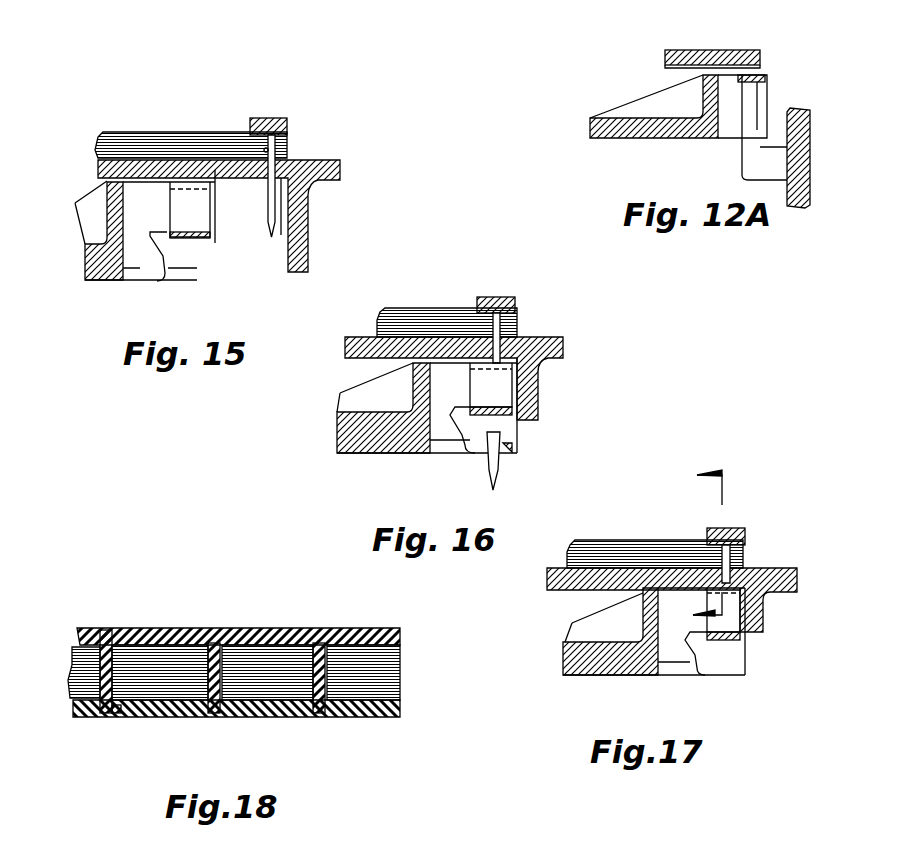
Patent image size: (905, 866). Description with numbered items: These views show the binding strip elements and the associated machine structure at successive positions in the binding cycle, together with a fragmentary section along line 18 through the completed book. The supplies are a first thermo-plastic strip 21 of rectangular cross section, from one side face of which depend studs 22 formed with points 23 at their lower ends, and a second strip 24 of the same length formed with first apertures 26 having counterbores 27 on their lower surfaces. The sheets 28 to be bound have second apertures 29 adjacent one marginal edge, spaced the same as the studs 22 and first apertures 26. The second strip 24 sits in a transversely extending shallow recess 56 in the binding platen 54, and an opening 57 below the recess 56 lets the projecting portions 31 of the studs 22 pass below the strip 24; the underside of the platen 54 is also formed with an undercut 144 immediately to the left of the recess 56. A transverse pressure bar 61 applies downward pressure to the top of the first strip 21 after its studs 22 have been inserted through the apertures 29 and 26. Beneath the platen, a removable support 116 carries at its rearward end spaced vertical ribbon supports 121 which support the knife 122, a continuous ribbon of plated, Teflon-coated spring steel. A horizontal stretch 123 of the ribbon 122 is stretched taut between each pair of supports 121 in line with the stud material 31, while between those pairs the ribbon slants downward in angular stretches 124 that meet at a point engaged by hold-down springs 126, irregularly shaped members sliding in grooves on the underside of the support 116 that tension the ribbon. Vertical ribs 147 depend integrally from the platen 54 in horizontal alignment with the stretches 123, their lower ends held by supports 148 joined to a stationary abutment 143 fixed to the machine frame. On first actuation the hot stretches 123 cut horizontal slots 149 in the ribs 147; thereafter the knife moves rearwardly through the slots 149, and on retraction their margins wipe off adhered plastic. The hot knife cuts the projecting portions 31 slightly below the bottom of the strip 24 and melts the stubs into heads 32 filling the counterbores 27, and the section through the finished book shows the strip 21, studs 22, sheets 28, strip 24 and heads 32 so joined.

In FIG. 17, the section line 18— 18 is at (704, 543).
In FIG. 15, the first thermo-plastic strip 21 is at (280, 119).
In FIG. 16, the first thermo-plastic strip 21 is at (515, 300).
In FIG. 17, the first thermo-plastic strip 21 is at (745, 533).
In FIG. 18, the first thermo-plastic strip 21 is at (233, 628).
In FIG. 15, the studs 22 is at (265, 142).
In FIG. 16, the studs 22 is at (503, 325).
In FIG. 17, the studs 22 is at (726, 564).
In FIG. 18, the studs 22 is at (222, 688).
In FIG. 15, the points 23 is at (268, 231).
In FIG. 16, the points 23 is at (497, 488).
In FIG. 15, the second strip 24 is at (314, 181).
In FIG. 17, the second strip 24 is at (738, 570).
In FIG. 18, the second strip 24 is at (380, 717).
In FIG. 15, the first apertures 26 is at (276, 150).
In FIG. 18, the first apertures 26 is at (114, 717).
In FIG. 15, the counterbores 27 is at (266, 190).
In FIG. 18, the counterbores 27 is at (100, 715).
In FIG. 15, the sheets 28 is at (155, 135).
In FIG. 16, the sheets 28 is at (447, 322).
In FIG. 17, the sheets 28 is at (655, 554).
In FIG. 18, the sheets 28 is at (165, 655).
In FIG. 15, the second apertures 29 is at (278, 138).
In FIG. 18, the second apertures 29 is at (108, 630).
In FIG. 15, the projecting portions of studs 31 is at (310, 225).
In FIG. 16, the projecting portions of studs 31 is at (510, 446).
In FIG. 17, the heads 32 is at (763, 612).
In FIG. 18, the heads 32 is at (318, 705).
In FIG. 15, the binding platen 54 is at (98, 170).
In FIG. 12A, the binding platen 54 is at (670, 50).
In FIG. 16, the binding platen 54 is at (454, 378).
In FIG. 15, the shallow recess 56 is at (312, 196).
In FIG. 15, the opening 57 is at (288, 249).
In FIG. 15, the pressure bar 61 is at (263, 115).
In FIG. 16, the pressure bar 61 is at (497, 292).
In FIG. 17, the pressure bar 61 is at (742, 518).
In FIG. 15, the removable support 116 is at (100, 268).
In FIG. 12A, the removable support 116 is at (667, 108).
In FIG. 16, the removable support 116 is at (393, 445).
In FIG. 17, the removable support 116 is at (630, 668).
In FIG. 15, the vertical ribbon supports 121 is at (207, 178).
In FIG. 12A, the vertical ribbon supports 121 is at (733, 106).
In FIG. 16, the vertical ribbon supports 121 is at (466, 387).
In FIG. 17, the vertical ribbon supports 121 is at (660, 620).
In FIG. 15, the knife 122 is at (180, 210).
In FIG. 16, the knife 122 is at (500, 385).
In FIG. 15, the horizontal stretch 123 is at (170, 190).
In FIG. 12A, the horizontal stretch 123 is at (765, 75).
In FIG. 16, the horizontal stretch 123 is at (512, 369).
In FIG. 17, the horizontal stretch 123 is at (738, 596).
In FIG. 15, the angular stretches 124 is at (188, 238).
In FIG. 15, the hold-down springs 126 is at (165, 262).
In FIG. 16, the hold-down springs 126 is at (503, 418).
In FIG. 17, the hold-down springs 126 is at (698, 653).
In FIG. 15, the stationary abutment 143 is at (310, 246).
In FIG. 12A, the stationary abutment 143 is at (810, 195).
In FIG. 15, the undercut 144 is at (215, 178).
In FIG. 12A, the vertical ribs 147 is at (745, 148).
In FIG. 12A, the supports 148 is at (775, 163).
In FIG. 12A, the horizontal slots 149 is at (770, 77).